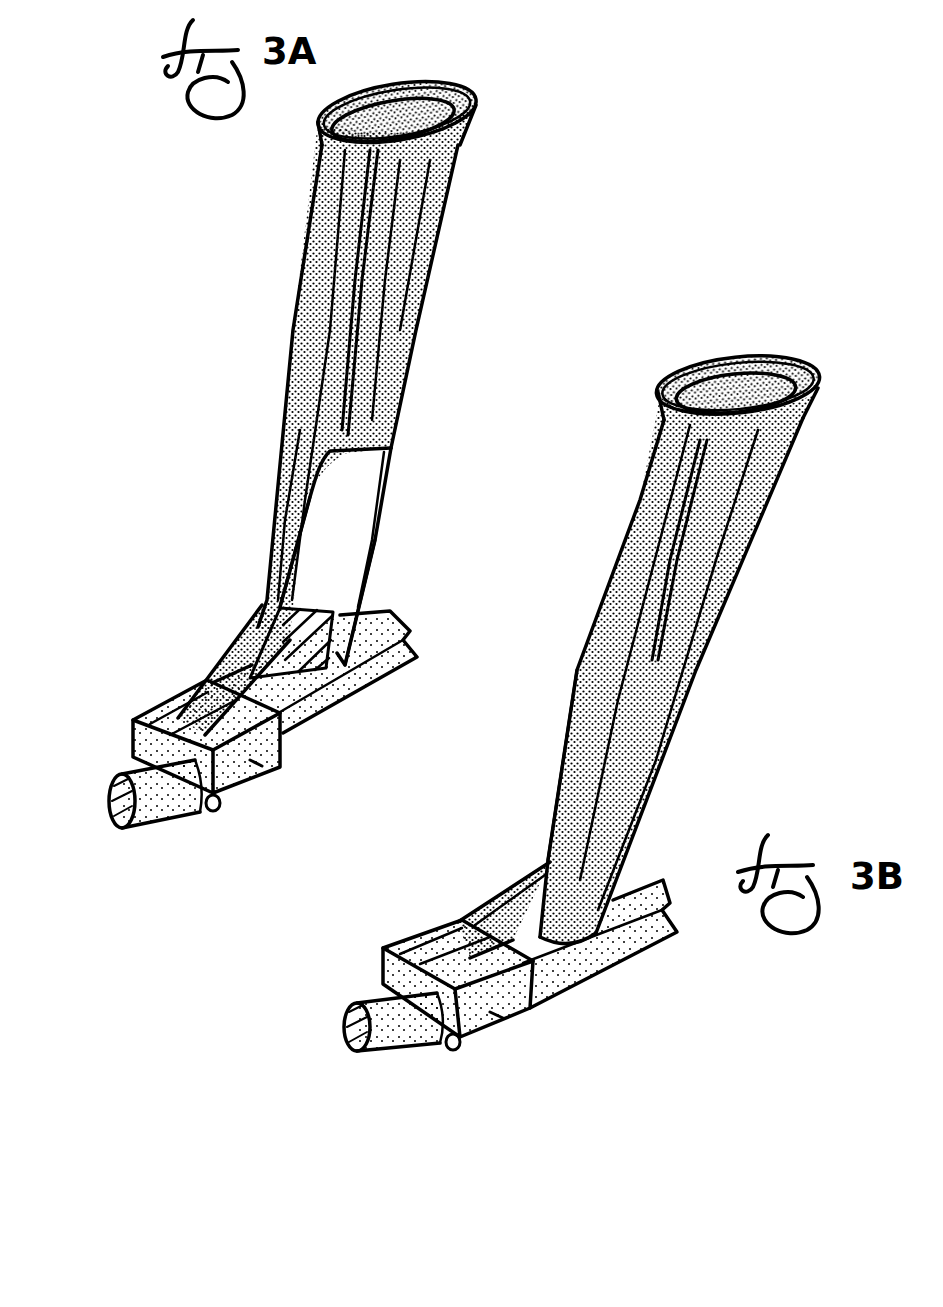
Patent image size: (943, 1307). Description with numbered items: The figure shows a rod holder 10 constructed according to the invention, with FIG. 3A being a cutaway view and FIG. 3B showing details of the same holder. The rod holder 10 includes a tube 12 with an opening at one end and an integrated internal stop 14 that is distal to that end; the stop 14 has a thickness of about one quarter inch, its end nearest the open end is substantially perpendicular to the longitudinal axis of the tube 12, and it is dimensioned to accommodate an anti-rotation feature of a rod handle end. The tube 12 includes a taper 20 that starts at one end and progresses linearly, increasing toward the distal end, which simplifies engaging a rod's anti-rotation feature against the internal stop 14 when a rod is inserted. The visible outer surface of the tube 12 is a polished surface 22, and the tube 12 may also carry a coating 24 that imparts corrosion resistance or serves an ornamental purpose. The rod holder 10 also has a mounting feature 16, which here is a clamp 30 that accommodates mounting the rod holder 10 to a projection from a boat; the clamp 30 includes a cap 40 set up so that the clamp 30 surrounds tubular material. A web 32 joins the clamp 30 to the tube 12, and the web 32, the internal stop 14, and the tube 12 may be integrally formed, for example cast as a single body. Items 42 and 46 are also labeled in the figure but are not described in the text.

In FIG. 3A, the rod holder 10 is at (422, 409).
In FIG. 3B, the rod holder 10 is at (602, 490).
In FIG. 3A, the tube 12 is at (428, 194).
In FIG. 3B, the tube 12 is at (780, 444).
In FIG. 3A, the internal stop 14 is at (360, 613).
In FIG. 3A, the mounting feature 16 is at (167, 685).
In FIG. 3B, the mounting feature 16 is at (428, 920).
In FIG. 3A, the taper 20 is at (264, 473).
In FIG. 3B, the taper 20 is at (553, 710).
In FIG. 3A, the polished surface 22 is at (333, 281).
In FIG. 3B, the polished surface 22 is at (650, 558).
In FIG. 3A, the coating 24 is at (385, 520).
In FIG. 3B, the coating 24 is at (738, 540).
In FIG. 3A, the clamp 30 is at (97, 715).
In FIG. 3B, the clamp 30 is at (338, 953).
In FIG. 3A, the web 32 is at (243, 646).
In FIG. 3B, the web 32 is at (503, 888).
In FIG. 3A, the cap 40 is at (257, 768).
In FIG. 3B, the cap 40 is at (497, 1018).
In FIG. 3A, the nut 42 is at (213, 815).
In FIG. 3B, the nut 42 is at (453, 1050).
In FIG. 3A, the flared rim 46 is at (480, 87).
In FIG. 3B, the flared rim 46 is at (822, 370).